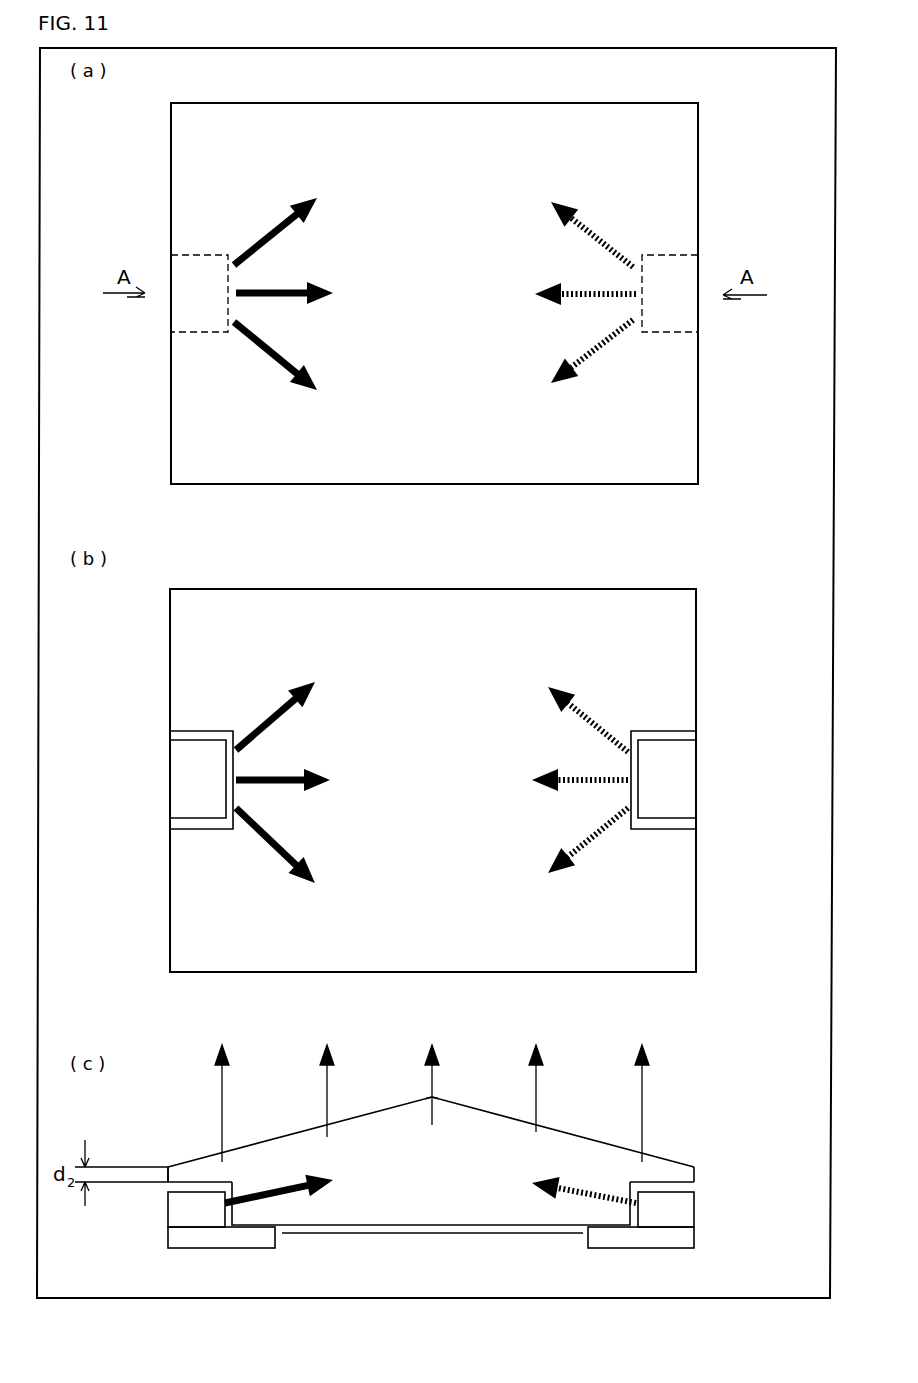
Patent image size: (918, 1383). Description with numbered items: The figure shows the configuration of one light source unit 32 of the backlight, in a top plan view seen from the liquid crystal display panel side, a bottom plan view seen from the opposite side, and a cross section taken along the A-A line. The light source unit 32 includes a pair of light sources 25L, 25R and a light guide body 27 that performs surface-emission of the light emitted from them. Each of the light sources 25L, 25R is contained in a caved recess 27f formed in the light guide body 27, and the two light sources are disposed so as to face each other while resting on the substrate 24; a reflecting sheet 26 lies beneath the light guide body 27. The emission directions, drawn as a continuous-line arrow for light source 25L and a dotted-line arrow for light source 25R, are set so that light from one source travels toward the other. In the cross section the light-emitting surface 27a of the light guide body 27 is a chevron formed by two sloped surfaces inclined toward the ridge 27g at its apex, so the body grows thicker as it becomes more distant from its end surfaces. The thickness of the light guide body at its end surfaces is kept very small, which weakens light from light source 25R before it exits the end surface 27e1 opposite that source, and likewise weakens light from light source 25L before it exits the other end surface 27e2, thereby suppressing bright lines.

The light source unit 32 is at (750, 88).
The light guide body 27 is at (608, 103).
The light-emitting surface 27a is at (604, 1141).
The ridge 27g is at (434, 1097).
The end surface 27e1 is at (165, 1167).
The another end surface 27e2 is at (695, 1170).
The caved recess 27f is at (170, 733).
The light source 25L is at (187, 310).
The light source 25R is at (683, 310).
The substrate 24 is at (690, 1238).
The reflecting sheet 26 is at (432, 1236).